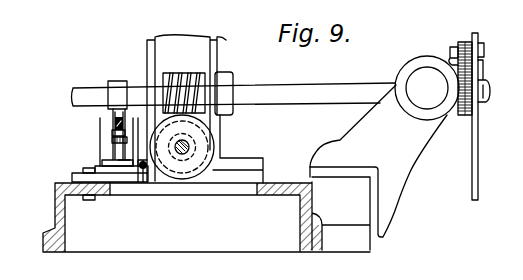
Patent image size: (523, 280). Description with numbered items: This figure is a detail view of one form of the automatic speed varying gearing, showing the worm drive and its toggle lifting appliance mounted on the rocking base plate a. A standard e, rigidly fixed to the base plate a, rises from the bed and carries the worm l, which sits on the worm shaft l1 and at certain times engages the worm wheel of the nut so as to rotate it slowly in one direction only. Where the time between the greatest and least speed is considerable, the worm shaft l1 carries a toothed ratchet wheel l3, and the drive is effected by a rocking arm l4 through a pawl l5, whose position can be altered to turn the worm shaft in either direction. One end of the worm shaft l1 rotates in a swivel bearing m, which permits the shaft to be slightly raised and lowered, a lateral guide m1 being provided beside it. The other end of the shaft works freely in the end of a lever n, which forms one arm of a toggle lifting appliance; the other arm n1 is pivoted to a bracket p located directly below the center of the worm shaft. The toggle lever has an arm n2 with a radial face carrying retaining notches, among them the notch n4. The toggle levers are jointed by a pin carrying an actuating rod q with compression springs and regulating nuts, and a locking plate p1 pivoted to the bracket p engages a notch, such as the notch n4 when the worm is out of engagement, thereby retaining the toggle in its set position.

The rocking base plate a is at (206, 214).
The standard e is at (217, 43).
The worm l is at (193, 73).
The worm shaft l1 is at (106, 88).
The toothed ratchet wheel l3 is at (467, 118).
The rocking arm l4 is at (472, 171).
The pawl l5 is at (450, 58).
The swivel bearing m is at (384, 146).
The lateral guide m1 is at (238, 127).
The lever n is at (125, 72).
The toggle arm n1 is at (112, 138).
The arm n2 is at (123, 166).
The retaining notch n4 is at (112, 150).
The bracket p is at (98, 146).
The locking plate p1 is at (112, 170).
The actuating rod q is at (114, 124).